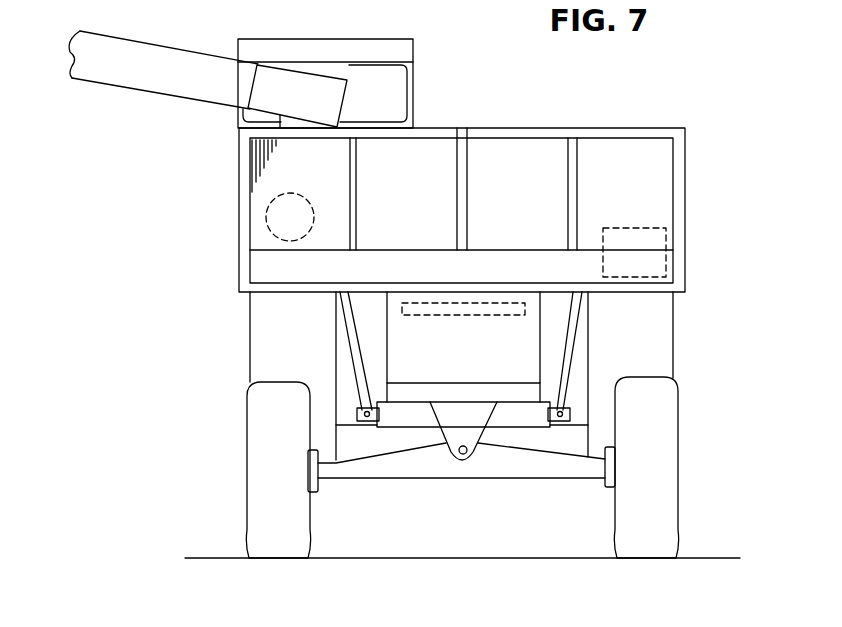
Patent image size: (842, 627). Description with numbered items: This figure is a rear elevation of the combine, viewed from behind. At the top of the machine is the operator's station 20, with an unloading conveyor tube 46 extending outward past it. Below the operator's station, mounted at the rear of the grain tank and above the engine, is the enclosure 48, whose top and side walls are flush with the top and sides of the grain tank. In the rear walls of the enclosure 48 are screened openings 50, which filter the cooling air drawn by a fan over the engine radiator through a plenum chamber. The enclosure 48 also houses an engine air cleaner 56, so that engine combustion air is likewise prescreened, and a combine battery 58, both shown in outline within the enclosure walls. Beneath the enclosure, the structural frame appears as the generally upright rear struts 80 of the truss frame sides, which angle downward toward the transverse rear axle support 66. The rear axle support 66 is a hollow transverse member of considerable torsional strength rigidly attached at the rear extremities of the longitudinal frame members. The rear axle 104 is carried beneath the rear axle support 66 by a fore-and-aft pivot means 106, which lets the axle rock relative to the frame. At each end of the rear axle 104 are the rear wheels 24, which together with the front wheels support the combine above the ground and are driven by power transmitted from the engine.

The operator's station 20 is at (354, 46).
The rear wheels 24 is at (250, 498).
The discharge chute 46 is at (158, 44).
The enclosure 48 is at (239, 250).
The screened openings 50 is at (270, 180).
The engine air cleaner 56 is at (308, 200).
The combine battery 58 is at (617, 226).
The rear axle support 66 is at (525, 423).
The rear struts 80 is at (355, 331).
The rear axle 104 is at (407, 479).
The fore-and-aft pivot means 106 is at (470, 452).